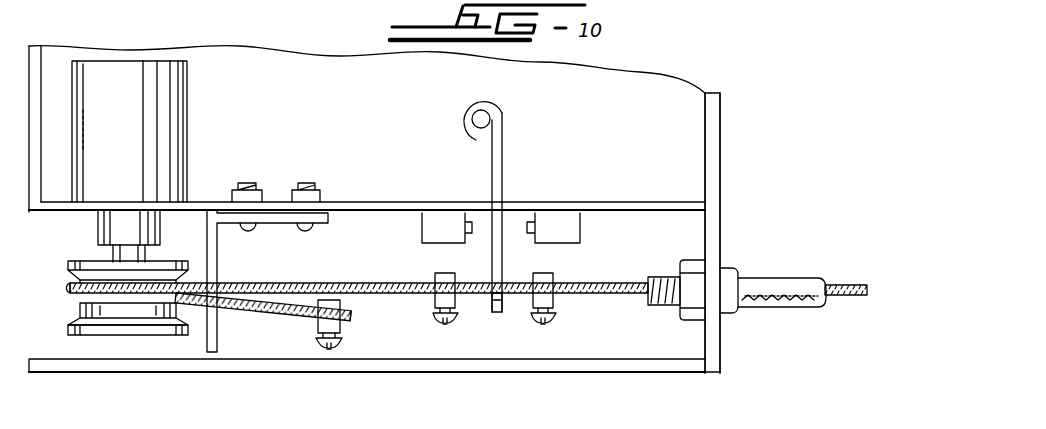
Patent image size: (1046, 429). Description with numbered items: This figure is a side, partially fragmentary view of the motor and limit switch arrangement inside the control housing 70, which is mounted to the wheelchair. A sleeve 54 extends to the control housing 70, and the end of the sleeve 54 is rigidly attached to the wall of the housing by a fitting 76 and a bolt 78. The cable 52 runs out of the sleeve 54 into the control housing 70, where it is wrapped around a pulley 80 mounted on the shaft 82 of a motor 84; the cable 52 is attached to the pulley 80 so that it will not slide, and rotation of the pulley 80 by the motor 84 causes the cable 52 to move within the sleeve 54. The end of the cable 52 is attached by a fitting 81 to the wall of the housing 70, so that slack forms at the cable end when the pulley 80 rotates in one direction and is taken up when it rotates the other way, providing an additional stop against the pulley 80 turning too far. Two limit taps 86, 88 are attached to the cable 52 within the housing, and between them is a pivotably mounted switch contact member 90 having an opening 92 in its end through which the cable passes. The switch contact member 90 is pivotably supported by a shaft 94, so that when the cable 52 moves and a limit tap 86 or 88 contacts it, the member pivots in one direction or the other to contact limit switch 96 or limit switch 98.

The cable 52 is at (290, 285).
The sleeve 54 is at (783, 278).
The control housing 70 is at (721, 181).
The fitting 76 is at (732, 269).
The bolt 78 is at (697, 262).
The pulley 80 is at (140, 335).
The fitting 81 is at (341, 328).
The shaft 82 is at (112, 254).
The motor 84 is at (188, 137).
The limit tap 86 is at (553, 300).
The limit tap 88 is at (456, 305).
The switch contact member 90 is at (503, 180).
The opening 92 is at (503, 277).
The shaft 94 is at (500, 113).
The limit switch 96 is at (580, 232).
The limit switch 98 is at (422, 236).